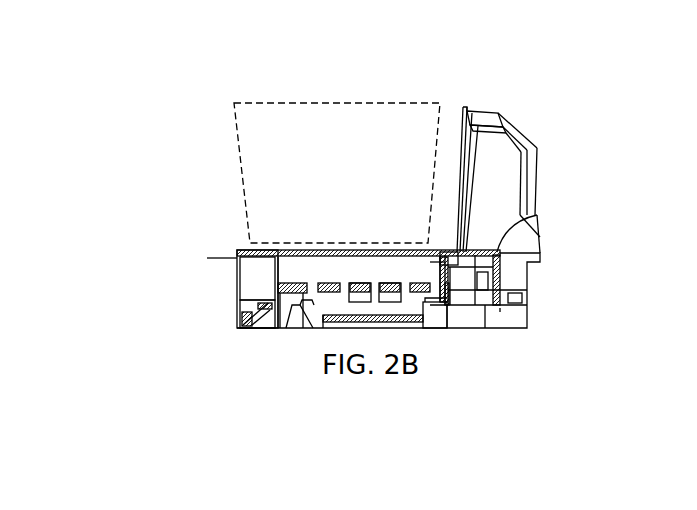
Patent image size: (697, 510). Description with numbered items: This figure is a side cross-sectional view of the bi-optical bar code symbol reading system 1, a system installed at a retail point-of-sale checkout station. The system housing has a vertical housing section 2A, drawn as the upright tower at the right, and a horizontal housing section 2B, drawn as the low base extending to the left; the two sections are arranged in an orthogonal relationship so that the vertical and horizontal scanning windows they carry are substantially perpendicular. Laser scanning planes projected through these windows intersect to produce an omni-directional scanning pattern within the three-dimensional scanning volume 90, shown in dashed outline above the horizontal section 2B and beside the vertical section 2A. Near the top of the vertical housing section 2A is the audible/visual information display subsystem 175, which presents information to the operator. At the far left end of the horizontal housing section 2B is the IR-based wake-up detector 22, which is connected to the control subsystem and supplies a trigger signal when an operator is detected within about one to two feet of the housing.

The bar code symbol reading system 1 is at (145, 148).
The 3D scanning volume 90 is at (346, 102).
The audible/visual information display subsystem 175 is at (467, 108).
The vertical housing section 2A is at (523, 135).
The horizontal housing section 2B is at (268, 250).
The IR-based wake-up detector 22 is at (238, 283).